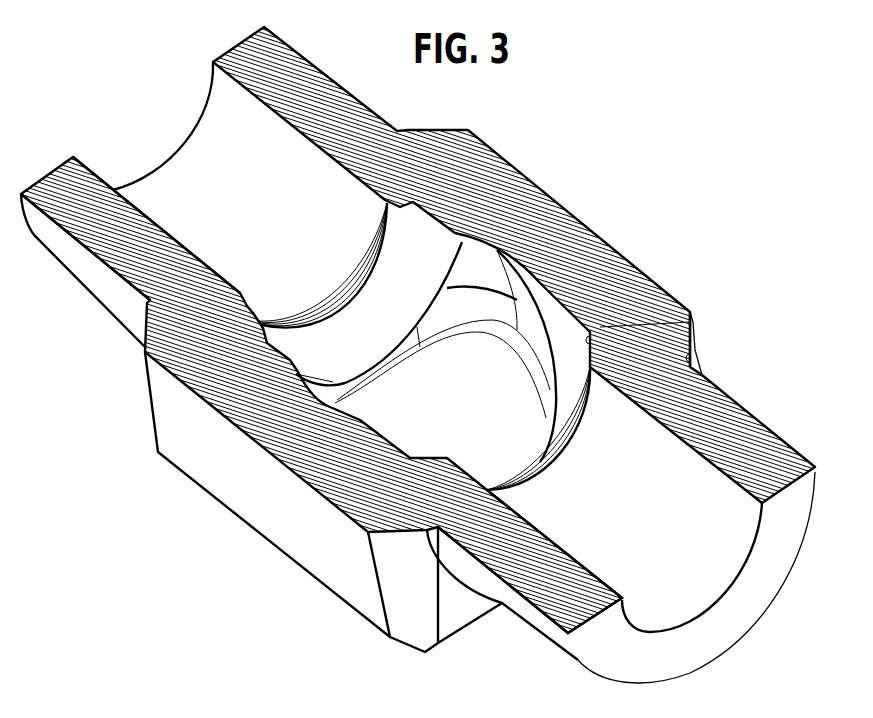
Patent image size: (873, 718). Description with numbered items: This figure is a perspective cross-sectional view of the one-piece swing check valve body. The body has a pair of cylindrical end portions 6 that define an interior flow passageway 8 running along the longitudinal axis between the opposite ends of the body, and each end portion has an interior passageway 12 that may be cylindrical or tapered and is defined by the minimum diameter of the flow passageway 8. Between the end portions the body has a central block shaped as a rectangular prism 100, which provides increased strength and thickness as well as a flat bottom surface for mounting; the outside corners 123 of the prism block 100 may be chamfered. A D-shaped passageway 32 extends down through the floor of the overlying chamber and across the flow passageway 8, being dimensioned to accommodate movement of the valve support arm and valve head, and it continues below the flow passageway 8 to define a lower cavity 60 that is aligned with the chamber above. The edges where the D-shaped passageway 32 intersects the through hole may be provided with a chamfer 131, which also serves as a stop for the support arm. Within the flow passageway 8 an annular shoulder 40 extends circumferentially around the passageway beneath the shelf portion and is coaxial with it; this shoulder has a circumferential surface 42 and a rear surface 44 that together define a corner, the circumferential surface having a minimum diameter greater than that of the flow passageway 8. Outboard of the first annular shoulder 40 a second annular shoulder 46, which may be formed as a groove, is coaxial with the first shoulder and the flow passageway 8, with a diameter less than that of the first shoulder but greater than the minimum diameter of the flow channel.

The cylindrical end portion 6 is at (75, 250).
The interior flow passageway 8 is at (708, 565).
The interior passageway 12 is at (183, 163).
The D-shaped passageway 32 is at (483, 357).
The annular shoulder 40 is at (453, 233).
The circumferential surface 42 is at (473, 227).
The rear surface 44 is at (437, 247).
The second annular shoulder 46 is at (378, 245).
The cavity 60 is at (473, 396).
The rectangular prism 100 is at (625, 302).
The outside corners 123 is at (695, 350).
The chamfer 131 is at (692, 323).